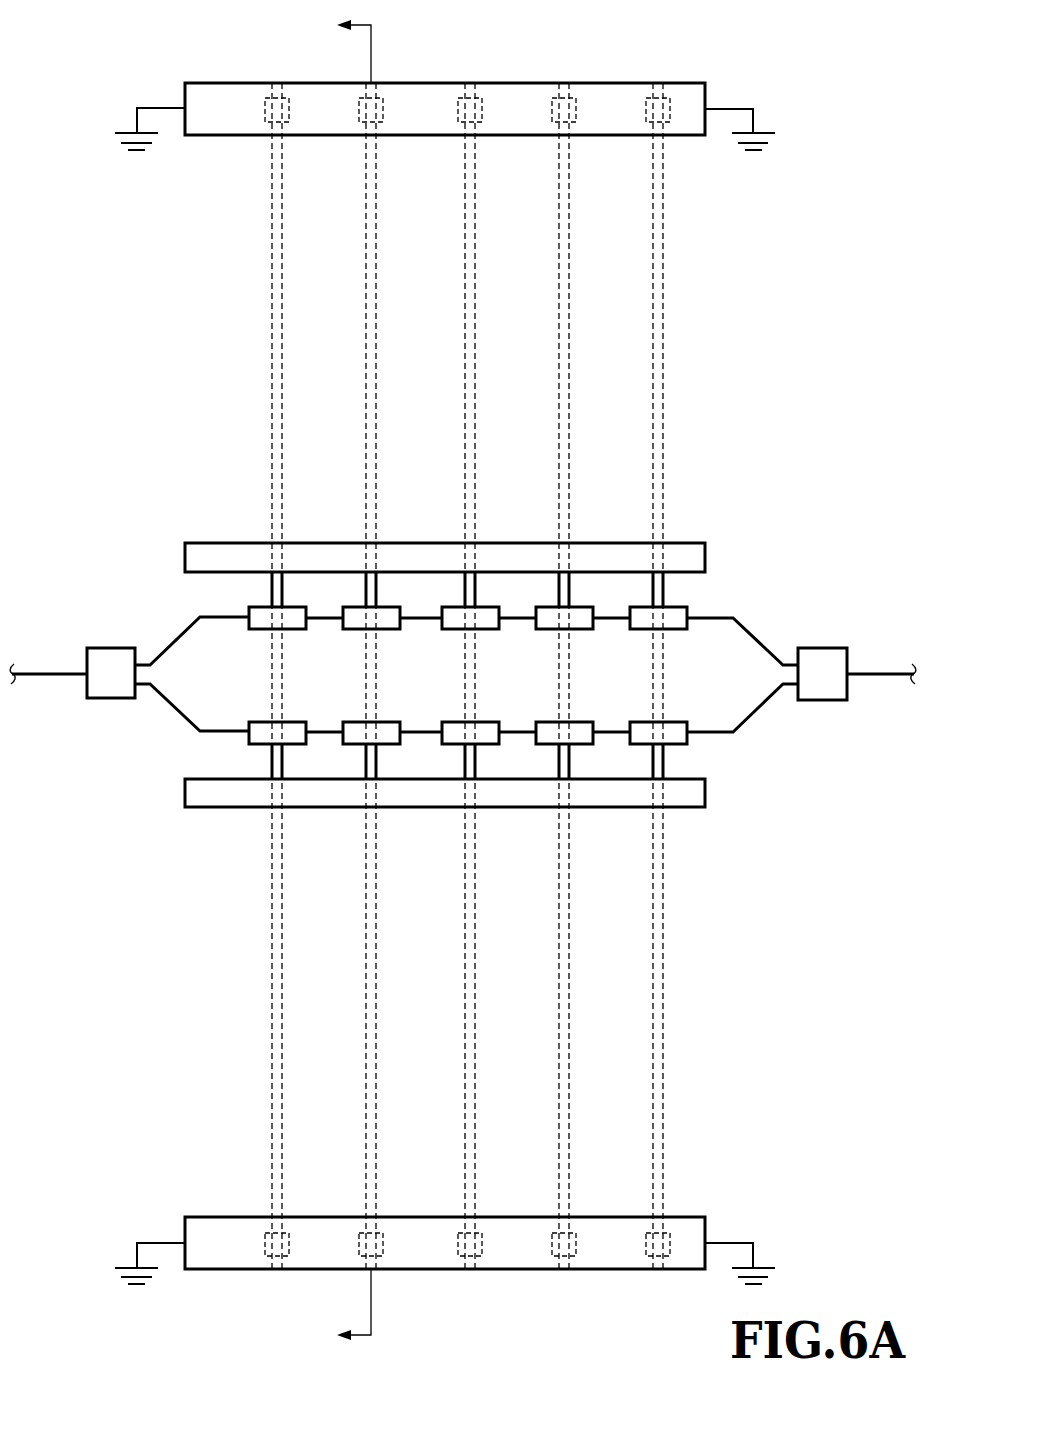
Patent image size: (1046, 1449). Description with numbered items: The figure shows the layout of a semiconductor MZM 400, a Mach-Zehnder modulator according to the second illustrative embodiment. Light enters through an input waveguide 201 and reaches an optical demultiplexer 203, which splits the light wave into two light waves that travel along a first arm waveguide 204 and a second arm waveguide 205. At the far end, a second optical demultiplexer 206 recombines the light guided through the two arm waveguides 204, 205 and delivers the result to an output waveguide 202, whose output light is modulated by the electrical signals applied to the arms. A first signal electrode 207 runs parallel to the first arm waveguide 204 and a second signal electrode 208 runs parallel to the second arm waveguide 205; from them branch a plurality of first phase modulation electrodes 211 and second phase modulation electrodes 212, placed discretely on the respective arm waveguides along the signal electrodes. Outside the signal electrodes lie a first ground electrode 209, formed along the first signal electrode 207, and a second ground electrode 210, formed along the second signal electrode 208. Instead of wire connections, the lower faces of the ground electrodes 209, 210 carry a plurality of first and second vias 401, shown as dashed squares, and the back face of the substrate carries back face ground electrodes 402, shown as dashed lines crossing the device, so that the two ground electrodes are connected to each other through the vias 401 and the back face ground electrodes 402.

The semiconductor MZM 400 is at (830, 121).
The input waveguide 201 is at (55, 674).
The output waveguide 202 is at (886, 674).
The optical demultiplexer 203 is at (115, 648).
The first arm waveguide 204 is at (175, 640).
The second arm waveguide 205 is at (182, 715).
The optical demultiplexer 206 is at (830, 648).
The first signal electrode 207 is at (697, 560).
The second signal electrode 208 is at (705, 790).
The first ground electrode 209 is at (705, 88).
The second ground electrode 210 is at (705, 1222).
The first phase modulation electrodes 211 is at (452, 628).
The second phase modulation electrodes 212 is at (547, 728).
The first and second vias 401 is at (633, 1288).
The back face ground electrodes 402 is at (272, 228).